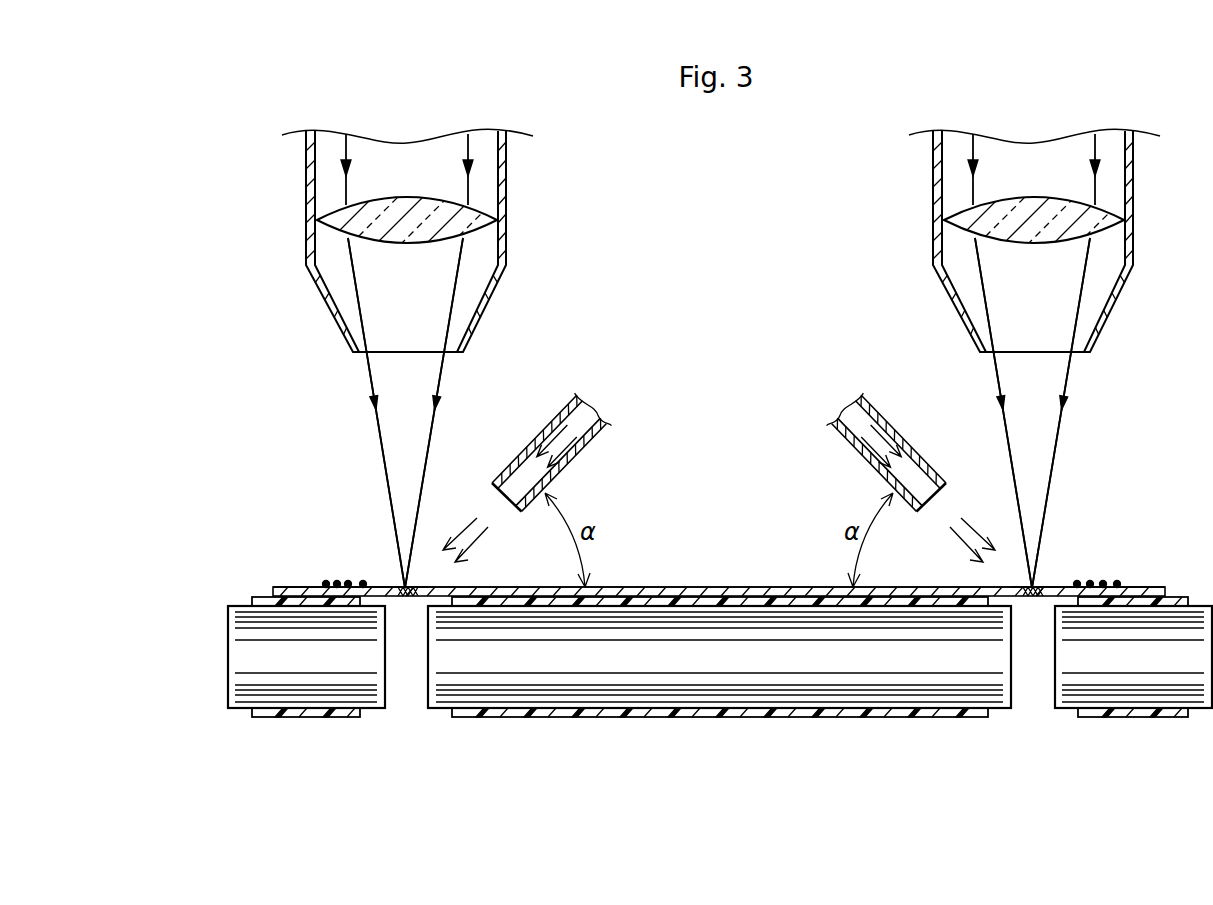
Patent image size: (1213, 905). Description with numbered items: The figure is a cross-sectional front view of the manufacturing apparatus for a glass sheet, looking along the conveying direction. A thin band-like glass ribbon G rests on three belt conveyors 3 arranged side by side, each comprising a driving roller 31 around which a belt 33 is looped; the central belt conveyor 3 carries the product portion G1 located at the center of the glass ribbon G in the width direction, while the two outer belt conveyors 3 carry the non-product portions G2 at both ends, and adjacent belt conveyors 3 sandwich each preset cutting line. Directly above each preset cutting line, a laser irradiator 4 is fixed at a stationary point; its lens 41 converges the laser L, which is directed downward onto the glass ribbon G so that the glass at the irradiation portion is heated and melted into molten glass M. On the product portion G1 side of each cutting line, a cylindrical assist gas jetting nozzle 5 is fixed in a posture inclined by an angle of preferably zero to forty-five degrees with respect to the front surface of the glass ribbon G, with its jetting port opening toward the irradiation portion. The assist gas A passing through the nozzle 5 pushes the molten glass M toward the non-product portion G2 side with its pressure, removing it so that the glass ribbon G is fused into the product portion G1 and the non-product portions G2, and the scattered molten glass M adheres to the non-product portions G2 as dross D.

The belt conveyor 3 is at (692, 674).
The driving roller 31 is at (227, 658).
The belt 33 is at (262, 597).
The laser irradiator 4 is at (506, 178).
The lens 41 is at (407, 243).
The assist gas jetting nozzle 5 is at (578, 457).
The glass ribbon G is at (684, 575).
The product portion G1 is at (742, 587).
The non-product portion G2 is at (292, 587).
The laser L is at (440, 375).
The molten glass M is at (404, 587).
The dross D is at (363, 583).
The assist gas A is at (719, 543).